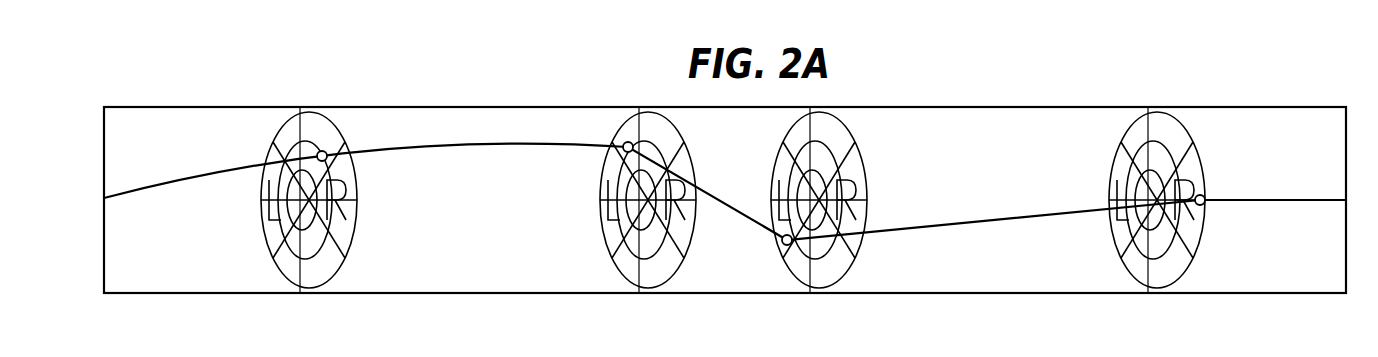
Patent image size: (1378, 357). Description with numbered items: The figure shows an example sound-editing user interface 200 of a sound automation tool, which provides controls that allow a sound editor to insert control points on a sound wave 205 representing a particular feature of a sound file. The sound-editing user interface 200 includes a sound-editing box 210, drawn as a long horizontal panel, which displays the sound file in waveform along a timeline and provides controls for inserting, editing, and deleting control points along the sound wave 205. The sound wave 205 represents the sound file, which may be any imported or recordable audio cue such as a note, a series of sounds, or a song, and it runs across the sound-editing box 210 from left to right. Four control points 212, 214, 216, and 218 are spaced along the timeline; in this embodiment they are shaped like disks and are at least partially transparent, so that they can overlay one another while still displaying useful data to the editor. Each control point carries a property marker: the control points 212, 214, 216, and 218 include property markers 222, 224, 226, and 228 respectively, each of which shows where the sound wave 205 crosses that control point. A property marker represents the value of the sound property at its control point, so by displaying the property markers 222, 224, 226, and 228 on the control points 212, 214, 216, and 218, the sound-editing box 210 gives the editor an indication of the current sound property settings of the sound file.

The sound-editing user interface 200 is at (1268, 99).
The sound wave 205 is at (1035, 216).
The sound-editing box 210 is at (158, 152).
The control point 212 is at (355, 230).
The control point 214 is at (695, 232).
The control point 216 is at (865, 240).
The control point 218 is at (1207, 230).
The property marker 222 is at (320, 133).
The property marker 224 is at (632, 133).
The property marker 226 is at (787, 246).
The property marker 228 is at (1198, 178).